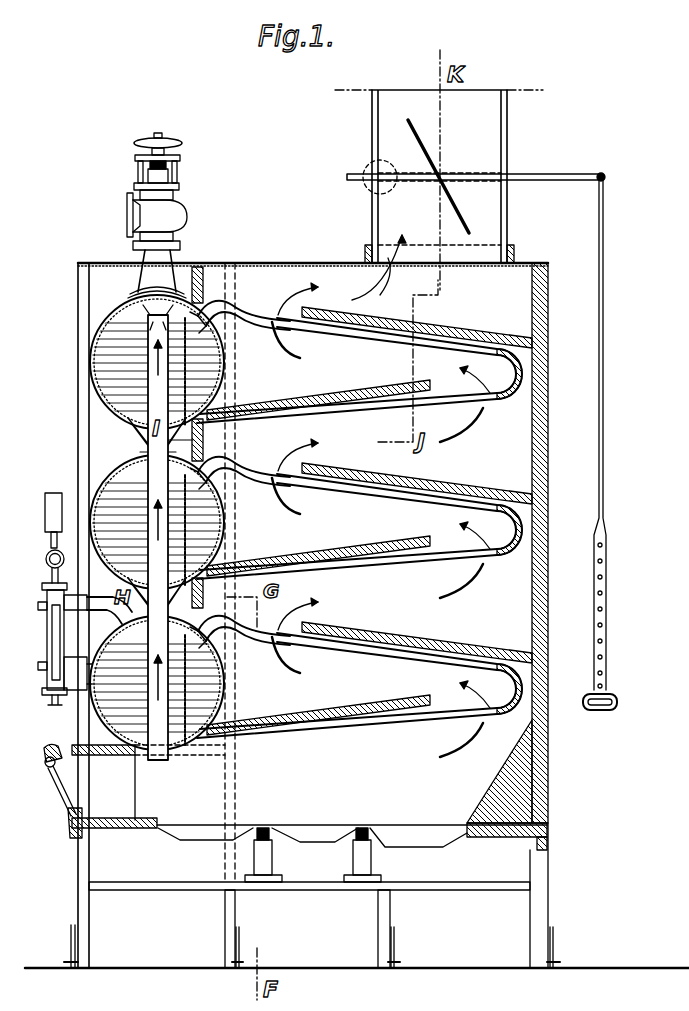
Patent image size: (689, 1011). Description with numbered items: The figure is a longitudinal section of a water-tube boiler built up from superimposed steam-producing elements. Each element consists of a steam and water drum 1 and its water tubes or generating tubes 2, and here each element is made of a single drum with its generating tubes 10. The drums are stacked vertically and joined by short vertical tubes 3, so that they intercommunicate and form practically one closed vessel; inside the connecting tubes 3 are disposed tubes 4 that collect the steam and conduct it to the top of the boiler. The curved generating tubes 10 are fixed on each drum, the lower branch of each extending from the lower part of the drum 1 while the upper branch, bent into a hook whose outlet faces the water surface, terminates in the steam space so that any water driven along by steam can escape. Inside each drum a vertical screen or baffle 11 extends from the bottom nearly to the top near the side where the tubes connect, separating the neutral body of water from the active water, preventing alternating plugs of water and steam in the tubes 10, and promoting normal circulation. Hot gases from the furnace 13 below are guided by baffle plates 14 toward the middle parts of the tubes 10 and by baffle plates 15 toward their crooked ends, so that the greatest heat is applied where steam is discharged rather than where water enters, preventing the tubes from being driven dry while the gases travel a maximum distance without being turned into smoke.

The steam and water drum 1 is at (110, 313).
The water tubes or generating tubes 2 is at (497, 400).
The short vertical tube 3 is at (153, 440).
The steam collecting tube 4 is at (150, 377).
The generating tube 10 is at (375, 713).
The vertical screen or baffle 11 is at (187, 356).
The furnace 13 is at (322, 827).
The baffle plate 14 is at (333, 547).
The baffle plate 15 is at (388, 640).